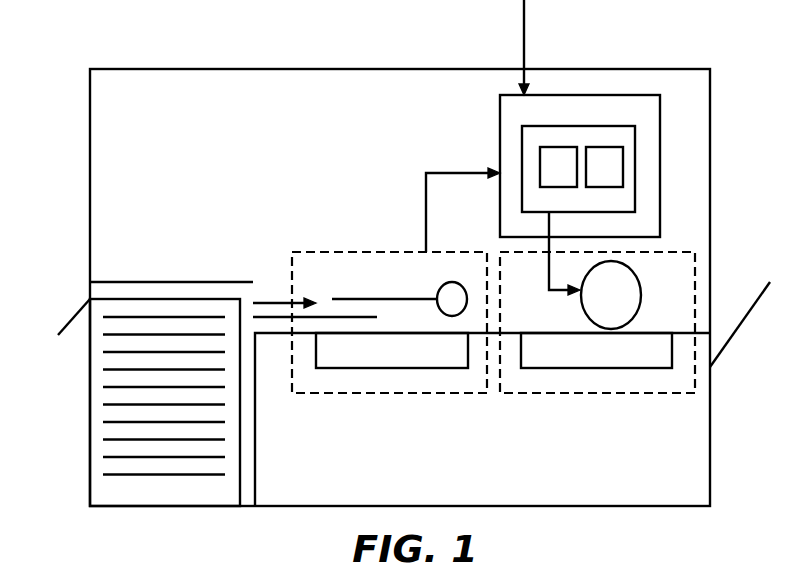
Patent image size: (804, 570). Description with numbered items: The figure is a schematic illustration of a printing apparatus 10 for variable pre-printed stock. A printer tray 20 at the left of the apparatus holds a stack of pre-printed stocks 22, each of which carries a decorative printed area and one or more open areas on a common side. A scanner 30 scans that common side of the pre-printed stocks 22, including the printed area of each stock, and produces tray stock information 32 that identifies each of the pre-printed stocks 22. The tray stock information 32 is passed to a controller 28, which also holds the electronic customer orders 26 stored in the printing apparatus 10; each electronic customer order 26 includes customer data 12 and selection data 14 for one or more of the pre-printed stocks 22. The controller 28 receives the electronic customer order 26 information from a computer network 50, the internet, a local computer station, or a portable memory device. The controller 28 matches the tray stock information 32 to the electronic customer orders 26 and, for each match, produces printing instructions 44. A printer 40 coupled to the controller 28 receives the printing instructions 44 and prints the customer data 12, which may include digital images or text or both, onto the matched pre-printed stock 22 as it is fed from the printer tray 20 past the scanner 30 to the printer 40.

The printing apparatus 10 is at (268, 68).
The customer data 12 is at (565, 147).
The selection data 14 is at (603, 147).
The printer tray 20 is at (172, 282).
The pre-printed stocks 22 is at (181, 475).
The electronic customer orders 26 is at (635, 176).
The controller 28 is at (650, 93).
The scanner 30 is at (352, 248).
The tray stock information 32 is at (465, 172).
The printer 40 is at (565, 395).
The printing instructions 44 is at (548, 270).
The computer network 50 is at (523, 18).